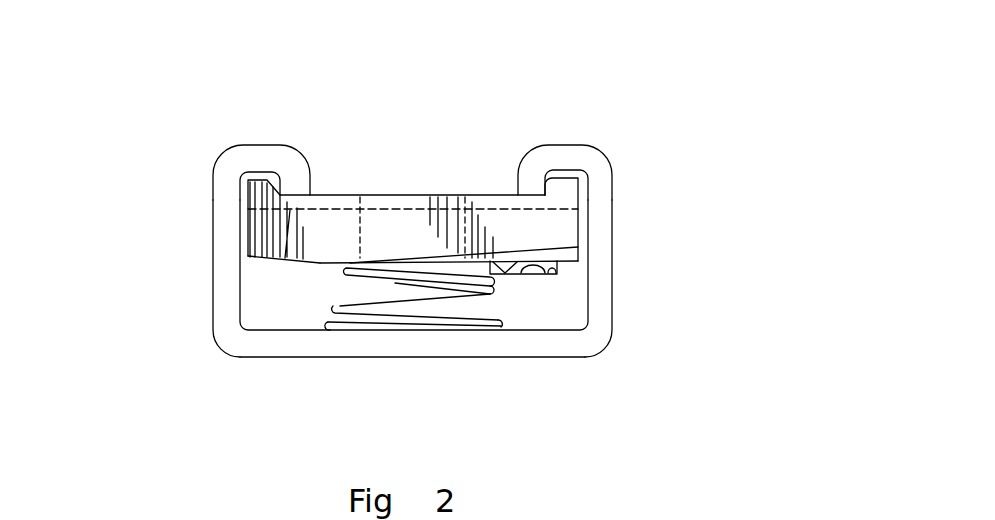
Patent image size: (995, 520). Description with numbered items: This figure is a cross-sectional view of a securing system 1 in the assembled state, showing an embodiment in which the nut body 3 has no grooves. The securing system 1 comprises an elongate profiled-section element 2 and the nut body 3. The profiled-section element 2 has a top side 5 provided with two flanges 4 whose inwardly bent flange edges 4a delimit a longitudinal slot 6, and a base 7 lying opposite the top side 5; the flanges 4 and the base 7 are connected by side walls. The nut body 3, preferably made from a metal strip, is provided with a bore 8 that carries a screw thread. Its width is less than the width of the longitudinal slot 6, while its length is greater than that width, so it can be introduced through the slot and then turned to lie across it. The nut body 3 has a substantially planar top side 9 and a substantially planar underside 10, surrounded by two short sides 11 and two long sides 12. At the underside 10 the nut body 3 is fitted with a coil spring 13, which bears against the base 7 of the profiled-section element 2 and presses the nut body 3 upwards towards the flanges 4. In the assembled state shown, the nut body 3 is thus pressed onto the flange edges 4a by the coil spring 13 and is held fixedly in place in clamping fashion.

The securing system 1 is at (167, 300).
The profiled-section element 2 is at (607, 302).
The nut body 3 is at (290, 212).
The flanges 4 is at (263, 157).
The flange edges 4a is at (298, 183).
The top side 5 is at (553, 118).
The longitudinal slot 6 is at (424, 184).
The base 7 is at (435, 347).
The bore 8 is at (447, 193).
The top side 9 is at (367, 193).
The underside 10 is at (313, 265).
The short sides 11 is at (247, 232).
The long sides 12 is at (421, 252).
The coil spring 13 is at (485, 290).